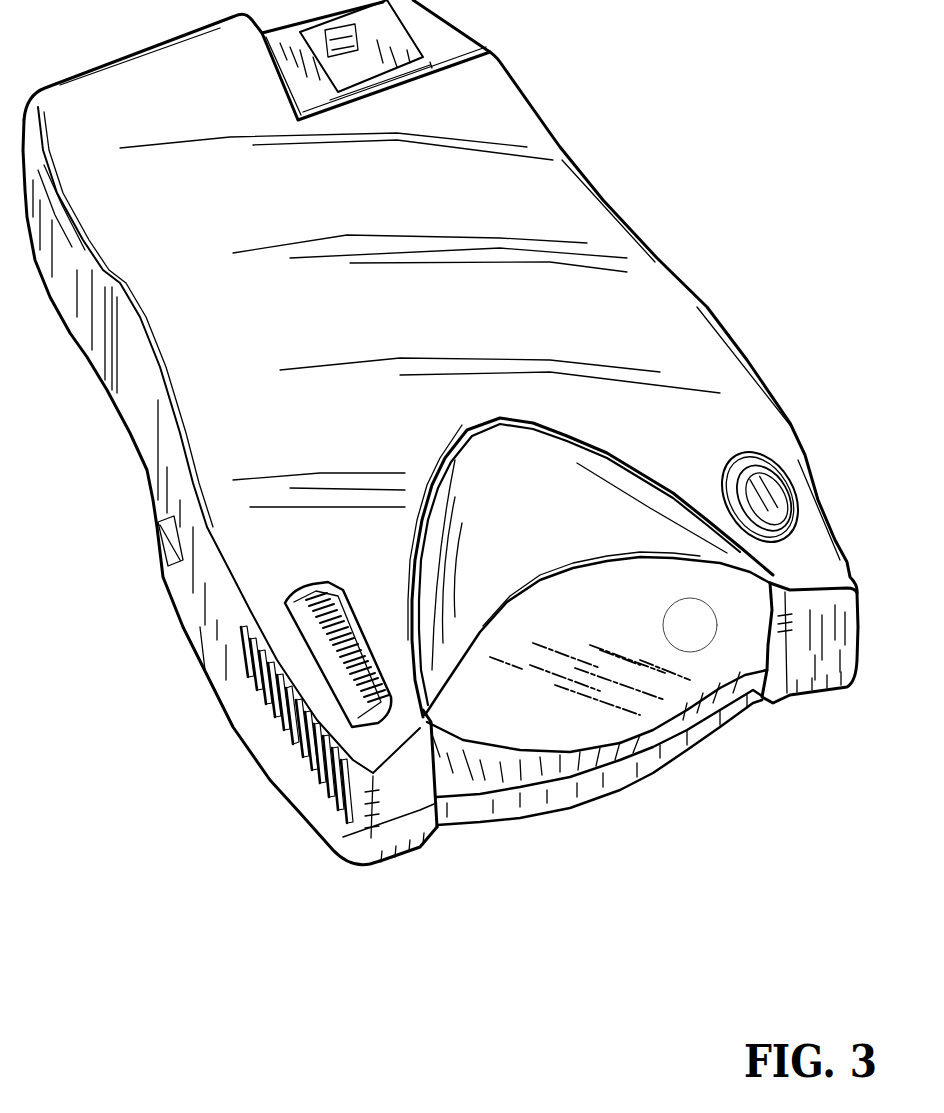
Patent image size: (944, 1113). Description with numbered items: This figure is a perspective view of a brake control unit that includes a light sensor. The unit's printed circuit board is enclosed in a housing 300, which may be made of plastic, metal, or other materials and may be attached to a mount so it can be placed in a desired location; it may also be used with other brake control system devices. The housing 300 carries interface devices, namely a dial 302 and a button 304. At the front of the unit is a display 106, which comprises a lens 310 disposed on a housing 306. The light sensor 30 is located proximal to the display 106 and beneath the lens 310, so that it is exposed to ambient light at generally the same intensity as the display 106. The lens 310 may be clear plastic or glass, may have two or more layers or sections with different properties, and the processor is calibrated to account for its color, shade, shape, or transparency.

The housing 300 is at (694, 67).
The dial 302 is at (320, 660).
The button 304 is at (770, 467).
The housing 306 is at (682, 379).
The light sensor 30 is at (697, 627).
The display 106 is at (650, 725).
The lens 310 is at (545, 732).